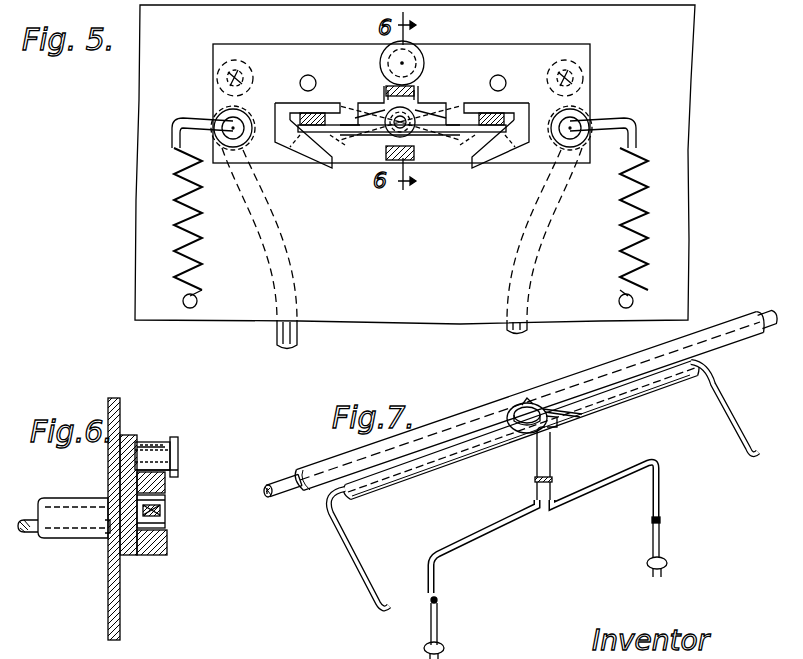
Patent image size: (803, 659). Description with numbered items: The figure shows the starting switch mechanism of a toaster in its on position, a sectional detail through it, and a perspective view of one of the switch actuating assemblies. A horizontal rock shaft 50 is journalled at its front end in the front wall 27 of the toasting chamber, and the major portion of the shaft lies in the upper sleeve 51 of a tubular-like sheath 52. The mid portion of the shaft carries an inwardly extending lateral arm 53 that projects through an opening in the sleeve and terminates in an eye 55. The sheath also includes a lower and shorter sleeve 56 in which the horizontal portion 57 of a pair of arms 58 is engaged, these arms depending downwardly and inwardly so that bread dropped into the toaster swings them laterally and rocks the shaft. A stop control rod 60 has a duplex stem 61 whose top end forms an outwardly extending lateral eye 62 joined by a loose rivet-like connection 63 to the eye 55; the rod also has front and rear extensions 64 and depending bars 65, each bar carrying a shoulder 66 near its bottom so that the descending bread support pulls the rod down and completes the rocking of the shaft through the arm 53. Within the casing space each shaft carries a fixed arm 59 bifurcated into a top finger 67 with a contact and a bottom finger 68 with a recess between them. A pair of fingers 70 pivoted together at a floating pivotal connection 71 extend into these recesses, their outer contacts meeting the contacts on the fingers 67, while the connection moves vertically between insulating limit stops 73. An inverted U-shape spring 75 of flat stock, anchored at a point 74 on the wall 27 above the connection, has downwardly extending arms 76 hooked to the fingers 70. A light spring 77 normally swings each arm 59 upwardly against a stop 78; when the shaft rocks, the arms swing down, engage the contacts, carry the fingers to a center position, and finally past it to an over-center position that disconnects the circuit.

In FIG. 5, the front wall 27 is at (685, 42).
In FIG. 6, the front wall 27 is at (120, 605).
In FIG. 5, the rock shaft 50 is at (573, 126).
In FIG. 6, the rock shaft 50 is at (22, 535).
In FIG. 7, the rock shaft 50 is at (290, 483).
In FIG. 6, the upper sleeve 51 is at (58, 538).
In FIG. 7, the upper sleeve 51 is at (330, 462).
In FIG. 7, the tubular sheath 52 is at (553, 395).
In FIG. 7, the lateral arm 53 is at (516, 403).
In FIG. 7, the eye 55 is at (553, 424).
In FIG. 7, the lower sleeve 56 is at (412, 477).
In FIG. 7, the horizontal portion 57 is at (387, 487).
In FIG. 5, the arms 58 is at (556, 251).
In FIG. 7, the arms 58 is at (734, 426).
In FIG. 7, the arm 59 is at (510, 410).
In FIG. 7, the stop control rod 60 is at (451, 627).
In FIG. 7, the duplex stem 61 is at (537, 480).
In FIG. 7, the lateral eye 62 is at (522, 433).
In FIG. 7, the rivet-like connection 63 is at (582, 413).
In FIG. 7, the front and rear extensions 64 is at (578, 500).
In FIG. 7, the depending bars 65 is at (655, 538).
In FIG. 7, the shoulder 66 is at (668, 565).
In FIG. 5, the top finger 67 is at (504, 108).
In FIG. 5, the bottom finger 68 is at (484, 178).
In FIG. 5, the fingers 70 is at (437, 128).
In FIG. 6, the fingers 70 is at (167, 515).
In FIG. 5, the pivotal connection 71 is at (395, 130).
In FIG. 6, the pivotal connection 71 is at (165, 521).
In FIG. 5, the limit stops 73 is at (405, 160).
In FIG. 6, the limit stops 73 is at (148, 552).
In FIG. 5, the anchor point 74 is at (406, 60).
In FIG. 6, the anchor point 74 is at (178, 445).
In FIG. 5, the inverted U-shape spring 75 is at (426, 95).
In FIG. 6, the inverted U-shape spring 75 is at (150, 440).
In FIG. 5, the downwardly extending arms 76 is at (445, 118).
In FIG. 5, the light spring 77 is at (634, 150).
In FIG. 5, the stops 78 is at (516, 70).